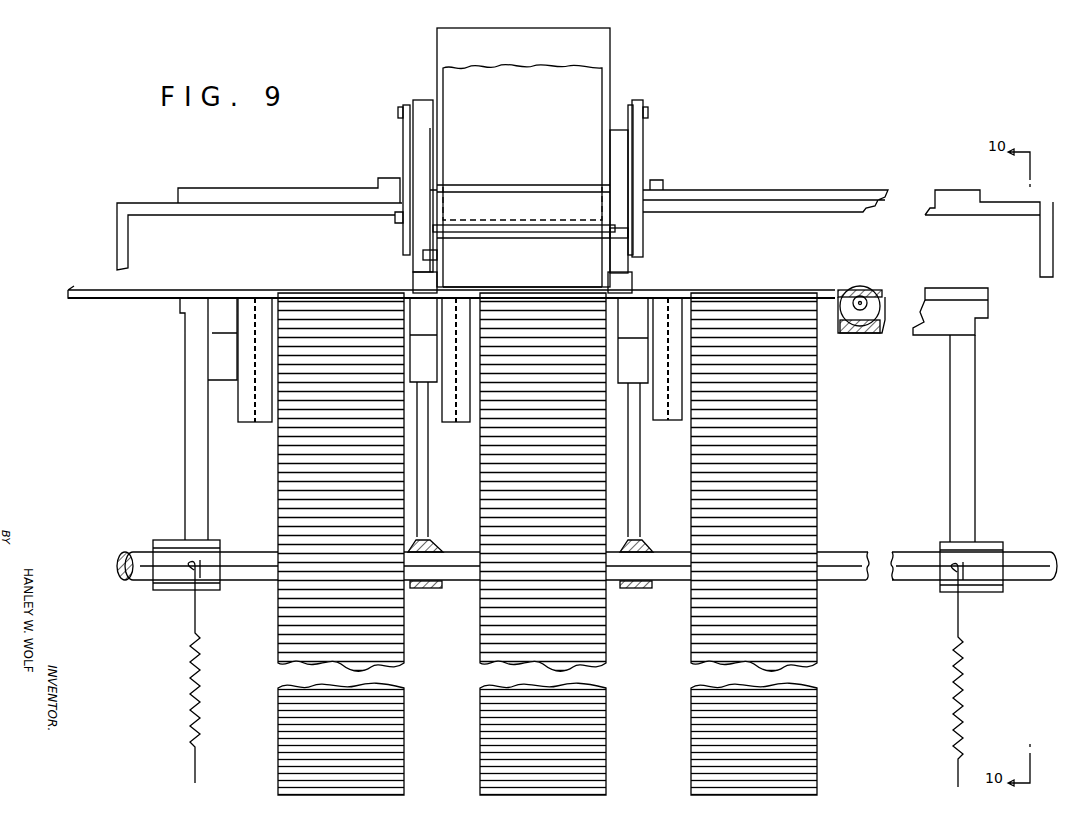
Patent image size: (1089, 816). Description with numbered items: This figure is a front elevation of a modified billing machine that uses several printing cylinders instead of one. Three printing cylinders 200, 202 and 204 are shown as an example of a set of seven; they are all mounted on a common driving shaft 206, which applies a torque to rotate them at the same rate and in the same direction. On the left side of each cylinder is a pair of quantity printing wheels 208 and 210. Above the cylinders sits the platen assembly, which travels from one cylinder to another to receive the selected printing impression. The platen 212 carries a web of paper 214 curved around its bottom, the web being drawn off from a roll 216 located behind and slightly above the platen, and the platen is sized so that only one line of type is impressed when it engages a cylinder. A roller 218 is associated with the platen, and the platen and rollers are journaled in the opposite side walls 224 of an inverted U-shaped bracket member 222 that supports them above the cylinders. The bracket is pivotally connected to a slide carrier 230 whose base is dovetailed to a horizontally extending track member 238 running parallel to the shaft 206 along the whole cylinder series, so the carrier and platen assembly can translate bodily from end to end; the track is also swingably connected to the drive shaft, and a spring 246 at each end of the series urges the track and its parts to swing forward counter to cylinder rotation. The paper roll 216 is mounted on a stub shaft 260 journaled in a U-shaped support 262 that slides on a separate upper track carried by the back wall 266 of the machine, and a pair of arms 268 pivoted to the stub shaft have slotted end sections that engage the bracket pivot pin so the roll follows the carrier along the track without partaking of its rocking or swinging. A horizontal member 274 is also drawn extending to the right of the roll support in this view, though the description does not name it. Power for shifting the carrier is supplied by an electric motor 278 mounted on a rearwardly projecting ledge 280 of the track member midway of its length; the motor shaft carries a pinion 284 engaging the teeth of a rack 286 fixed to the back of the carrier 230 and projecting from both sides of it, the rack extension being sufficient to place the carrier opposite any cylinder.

The printing cylinder 200 is at (278, 640).
The printing cylinder 202 is at (480, 645).
The printing cylinder 204 is at (691, 645).
The common driving shaft 206 is at (910, 552).
The quantity printing wheel 208 is at (247, 425).
The quantity printing wheel 210 is at (262, 425).
The platen 212 is at (600, 250).
The web of paper 214 is at (585, 87).
The roll 216 is at (597, 47).
The roller 218 is at (525, 190).
The inverted U-shaped bracket member 222 is at (430, 185).
The side wall 224 is at (432, 255).
The slide carrier 230 is at (415, 283).
The track member 238 is at (935, 335).
The spring 246 is at (200, 705).
The stub shaft 260 is at (398, 112).
The U-shaped support 262 is at (420, 108).
The back wall 266 is at (120, 243).
The arm 268 is at (404, 128).
The arm 274 is at (782, 190).
The electric motor 278 is at (885, 305).
The rearwardly projecting ledge 280 is at (858, 335).
The pinion 284 is at (865, 300).
The rack 286 is at (80, 290).